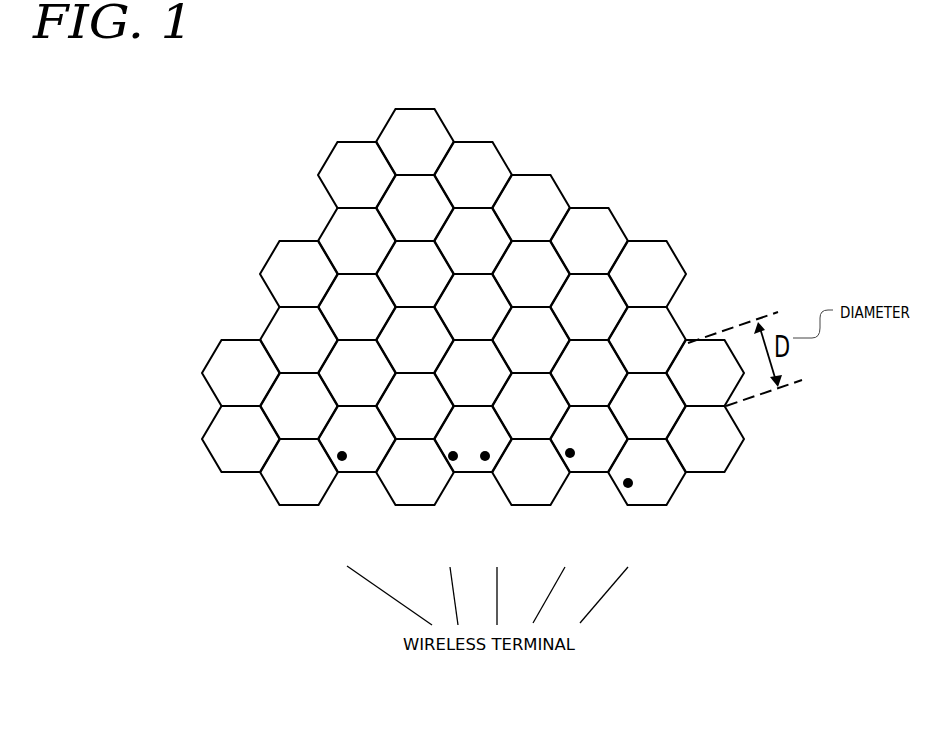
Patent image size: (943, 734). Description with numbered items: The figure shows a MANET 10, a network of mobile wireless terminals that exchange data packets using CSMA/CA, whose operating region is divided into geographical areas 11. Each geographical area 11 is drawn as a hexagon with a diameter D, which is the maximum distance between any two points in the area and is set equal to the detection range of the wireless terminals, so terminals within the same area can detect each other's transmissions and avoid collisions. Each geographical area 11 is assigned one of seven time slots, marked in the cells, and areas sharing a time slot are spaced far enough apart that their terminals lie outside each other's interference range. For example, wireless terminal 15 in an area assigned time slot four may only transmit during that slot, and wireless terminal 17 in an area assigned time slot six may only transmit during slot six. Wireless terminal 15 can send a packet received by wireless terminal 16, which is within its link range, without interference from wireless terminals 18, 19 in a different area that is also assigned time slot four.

The MANET 10 is at (201, 97).
The geographical area 11 is at (463, 302).
The wireless terminal 15 is at (629, 489).
The wireless terminal 16 is at (570, 459).
The wireless terminal 17 is at (341, 462).
The wireless terminal 18 is at (452, 462).
The wireless terminal 19 is at (487, 462).